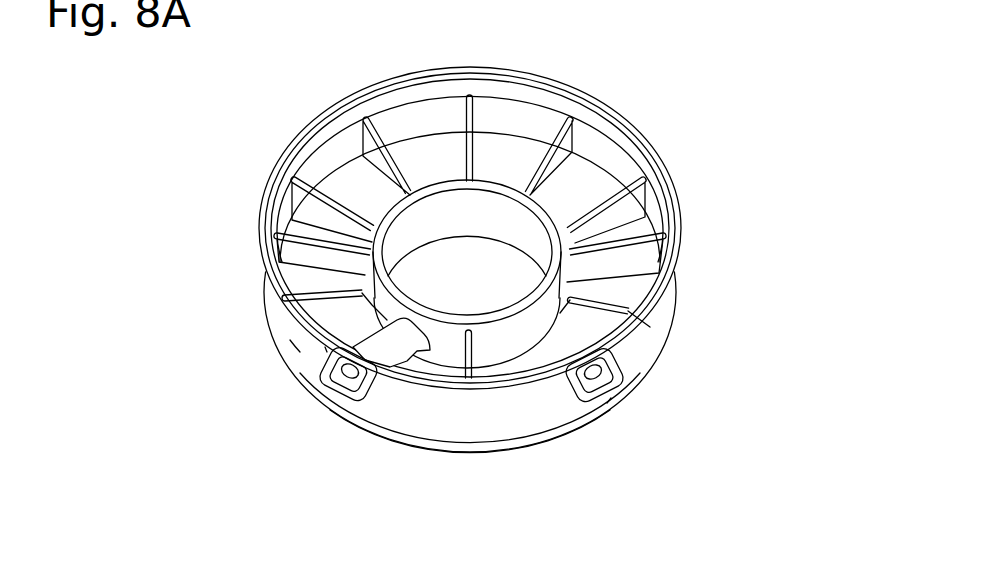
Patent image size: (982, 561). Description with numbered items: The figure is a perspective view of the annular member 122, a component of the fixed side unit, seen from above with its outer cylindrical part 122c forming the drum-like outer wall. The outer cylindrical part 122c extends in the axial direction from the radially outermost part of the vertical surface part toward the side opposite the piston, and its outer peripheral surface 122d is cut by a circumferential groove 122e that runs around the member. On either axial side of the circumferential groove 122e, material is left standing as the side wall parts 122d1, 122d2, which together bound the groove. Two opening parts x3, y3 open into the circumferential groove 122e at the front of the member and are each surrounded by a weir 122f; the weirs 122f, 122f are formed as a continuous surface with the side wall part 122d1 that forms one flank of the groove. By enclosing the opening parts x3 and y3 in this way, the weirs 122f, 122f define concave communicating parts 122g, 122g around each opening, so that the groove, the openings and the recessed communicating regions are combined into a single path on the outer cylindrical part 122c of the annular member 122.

The annular member 122 is at (750, 116).
The outer cylindrical part 122c is at (594, 448).
The outer peripheral surface 122d is at (470, 310).
The side wall part 122d1 is at (396, 384).
The side wall part 122d2 is at (444, 454).
The circumferential groove 122e is at (512, 420).
The weir 122f is at (322, 358).
The concave communicating part 122g is at (325, 347).
The opening part x3 is at (350, 371).
The opening part y3 is at (593, 373).